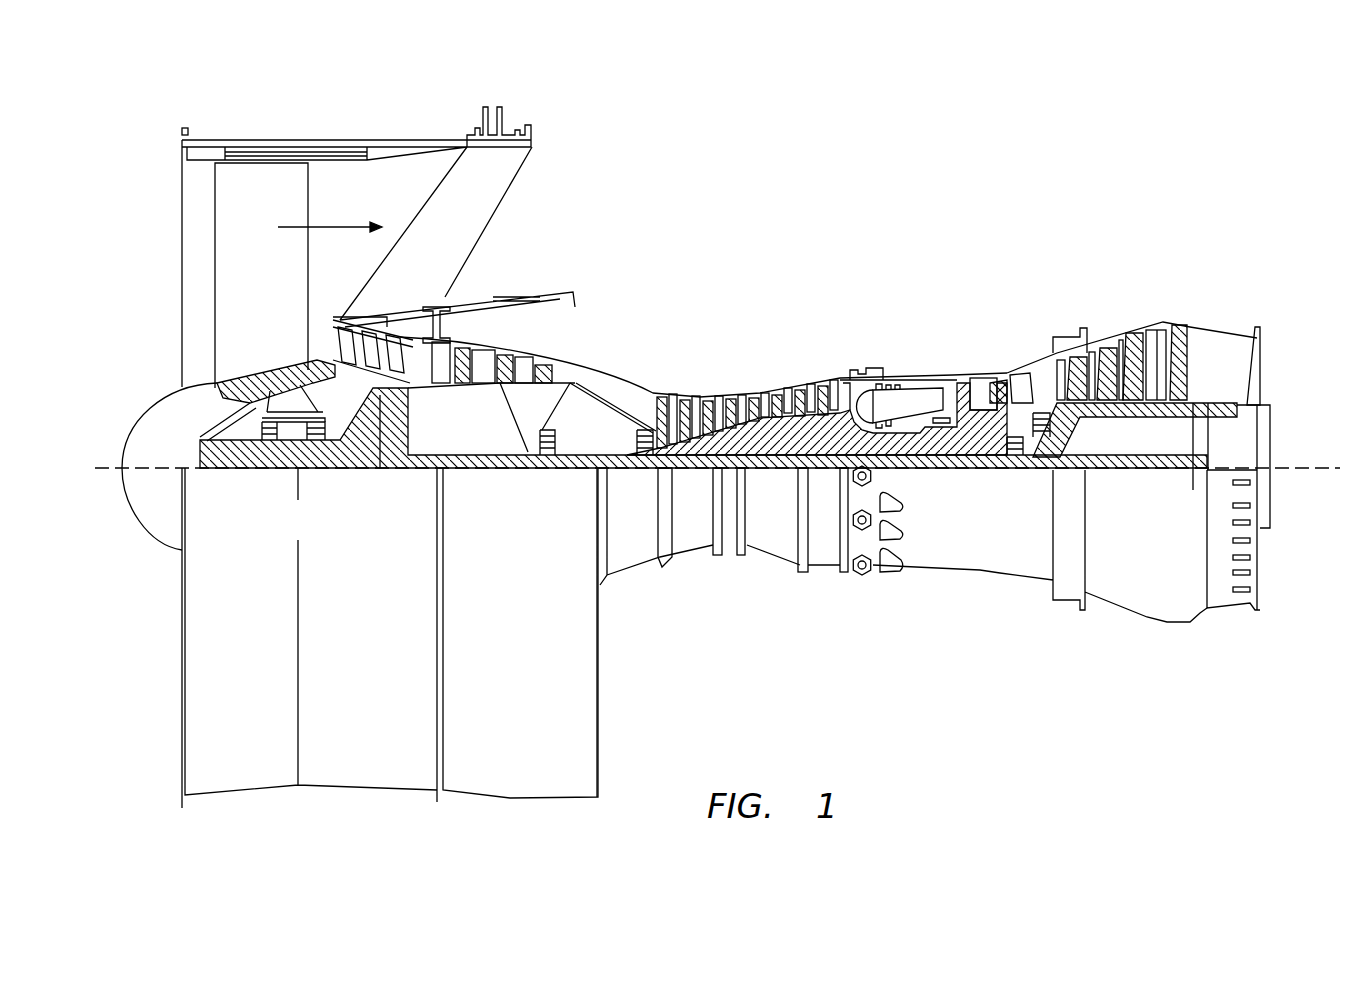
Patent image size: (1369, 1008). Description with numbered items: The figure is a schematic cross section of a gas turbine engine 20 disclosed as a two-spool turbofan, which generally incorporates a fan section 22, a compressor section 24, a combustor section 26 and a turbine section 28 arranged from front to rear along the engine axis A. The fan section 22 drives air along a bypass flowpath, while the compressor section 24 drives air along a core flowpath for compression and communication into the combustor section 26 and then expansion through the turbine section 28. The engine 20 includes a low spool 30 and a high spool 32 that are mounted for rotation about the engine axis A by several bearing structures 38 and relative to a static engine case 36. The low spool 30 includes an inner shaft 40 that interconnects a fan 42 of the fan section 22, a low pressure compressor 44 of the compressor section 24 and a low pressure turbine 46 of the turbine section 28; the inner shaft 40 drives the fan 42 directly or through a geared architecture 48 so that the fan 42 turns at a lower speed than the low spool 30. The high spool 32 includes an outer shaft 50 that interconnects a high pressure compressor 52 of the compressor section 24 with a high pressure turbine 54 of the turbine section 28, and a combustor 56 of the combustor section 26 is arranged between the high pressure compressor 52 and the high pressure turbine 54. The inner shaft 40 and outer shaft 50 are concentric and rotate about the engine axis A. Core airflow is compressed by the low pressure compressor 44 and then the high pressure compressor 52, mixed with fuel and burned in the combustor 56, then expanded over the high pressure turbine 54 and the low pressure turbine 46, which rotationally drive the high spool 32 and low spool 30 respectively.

The gas turbine engine 20 is at (946, 178).
The fan section 22 is at (438, 117).
The compressor section 24 is at (447, 272).
The combustor section 26 is at (850, 272).
The turbine section 28 is at (1197, 272).
The low spool 30 is at (777, 476).
The high spool 32 is at (820, 430).
The static engine case 36 is at (827, 576).
The bearing structures 38 is at (325, 487).
The inner shaft 40 is at (688, 470).
The fan 42 is at (268, 296).
The low pressure compressor 44 is at (523, 357).
The low pressure turbine 46 is at (1127, 340).
The geared architecture 48 is at (392, 457).
The outer shaft 50 is at (913, 470).
The high pressure compressor 52 is at (755, 393).
The high pressure turbine 54 is at (980, 377).
The combustor 56 is at (905, 403).
The engine axis A is at (1320, 465).